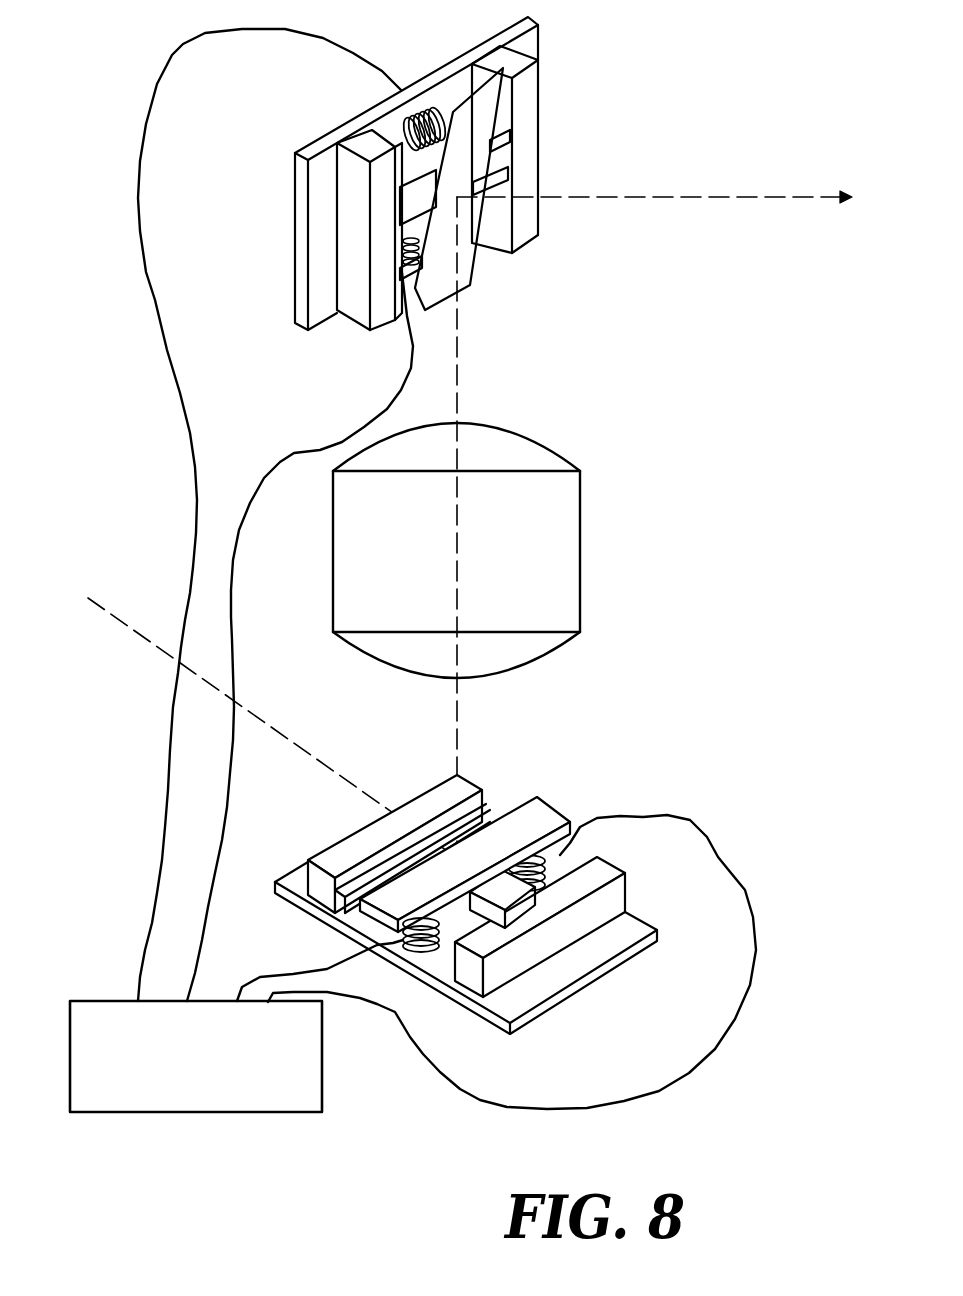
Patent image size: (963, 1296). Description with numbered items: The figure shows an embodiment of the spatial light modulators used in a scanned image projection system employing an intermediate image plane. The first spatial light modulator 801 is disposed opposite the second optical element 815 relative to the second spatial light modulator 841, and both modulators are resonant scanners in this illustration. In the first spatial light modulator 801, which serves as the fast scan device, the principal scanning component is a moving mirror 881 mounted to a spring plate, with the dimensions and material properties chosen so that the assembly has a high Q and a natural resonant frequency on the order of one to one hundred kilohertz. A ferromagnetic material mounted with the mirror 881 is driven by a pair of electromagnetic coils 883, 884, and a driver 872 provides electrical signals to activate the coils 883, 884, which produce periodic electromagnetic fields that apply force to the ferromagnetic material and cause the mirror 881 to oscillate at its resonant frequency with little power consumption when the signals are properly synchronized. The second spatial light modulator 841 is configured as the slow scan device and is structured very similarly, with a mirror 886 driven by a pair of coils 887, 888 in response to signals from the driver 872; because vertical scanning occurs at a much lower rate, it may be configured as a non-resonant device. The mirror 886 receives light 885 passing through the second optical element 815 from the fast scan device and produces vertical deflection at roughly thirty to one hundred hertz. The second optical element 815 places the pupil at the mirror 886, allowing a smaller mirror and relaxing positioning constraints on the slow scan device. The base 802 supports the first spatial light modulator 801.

The first spatial light modulator 801 is at (568, 930).
The base plate 802 is at (512, 893).
The second optical element 815 is at (582, 566).
The second spatial light modulator 841 is at (496, 191).
The driver 872 is at (178, 1110).
The moving mirror 881 is at (537, 818).
The electromagnetic coil 883 is at (412, 950).
The electromagnetic coil 884 is at (545, 872).
The light 885 is at (124, 622).
The mirror 886 is at (470, 207).
The coil 887 is at (413, 106).
The coil 888 is at (420, 248).